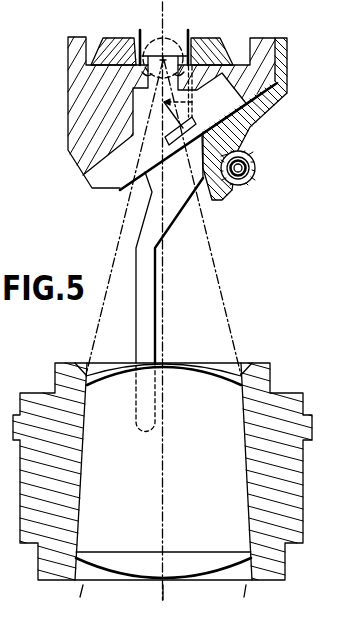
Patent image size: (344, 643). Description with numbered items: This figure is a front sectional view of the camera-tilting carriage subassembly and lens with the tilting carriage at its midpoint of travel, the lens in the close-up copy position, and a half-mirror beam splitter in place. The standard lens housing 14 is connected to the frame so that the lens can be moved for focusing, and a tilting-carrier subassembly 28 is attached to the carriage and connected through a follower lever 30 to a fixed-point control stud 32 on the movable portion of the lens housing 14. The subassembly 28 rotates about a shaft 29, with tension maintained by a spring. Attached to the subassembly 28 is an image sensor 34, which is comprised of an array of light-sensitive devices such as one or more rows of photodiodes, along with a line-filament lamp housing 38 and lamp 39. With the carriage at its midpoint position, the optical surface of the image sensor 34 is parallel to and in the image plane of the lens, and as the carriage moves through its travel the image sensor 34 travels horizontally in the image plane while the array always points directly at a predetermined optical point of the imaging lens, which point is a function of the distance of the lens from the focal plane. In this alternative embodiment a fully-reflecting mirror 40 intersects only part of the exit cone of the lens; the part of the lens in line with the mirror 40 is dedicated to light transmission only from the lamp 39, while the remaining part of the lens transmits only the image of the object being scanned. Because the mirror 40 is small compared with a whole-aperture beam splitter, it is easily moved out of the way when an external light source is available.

The lens housing 14 is at (296, 511).
The tilting-carrier subassembly 28 is at (77, 101).
The shaft 29 is at (158, 38).
The follower lever 30 is at (136, 336).
The fixed-point control stud 32 is at (170, 405).
The image sensor 34 is at (168, 46).
The lamp housing 38 is at (253, 183).
The lamp 39 is at (254, 162).
The fully-reflecting mirror 40 is at (193, 105).